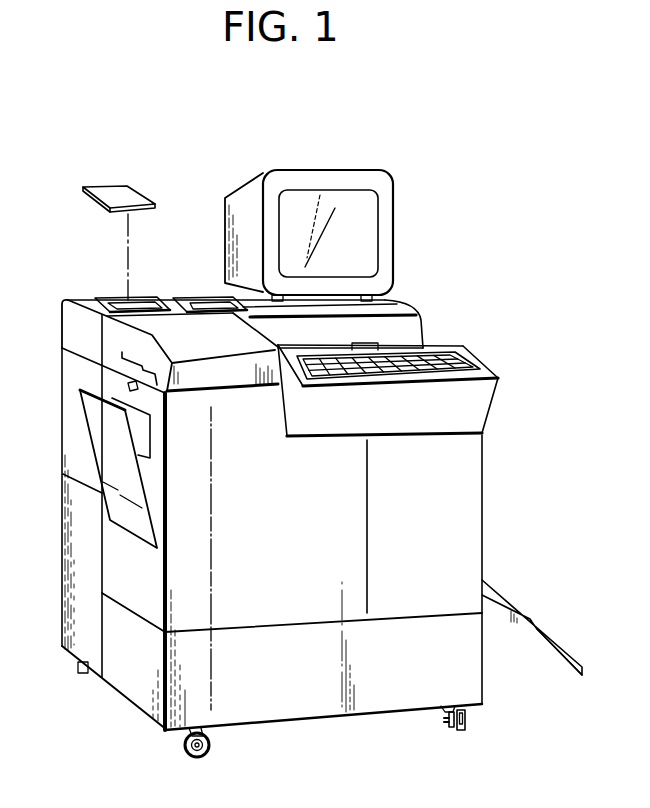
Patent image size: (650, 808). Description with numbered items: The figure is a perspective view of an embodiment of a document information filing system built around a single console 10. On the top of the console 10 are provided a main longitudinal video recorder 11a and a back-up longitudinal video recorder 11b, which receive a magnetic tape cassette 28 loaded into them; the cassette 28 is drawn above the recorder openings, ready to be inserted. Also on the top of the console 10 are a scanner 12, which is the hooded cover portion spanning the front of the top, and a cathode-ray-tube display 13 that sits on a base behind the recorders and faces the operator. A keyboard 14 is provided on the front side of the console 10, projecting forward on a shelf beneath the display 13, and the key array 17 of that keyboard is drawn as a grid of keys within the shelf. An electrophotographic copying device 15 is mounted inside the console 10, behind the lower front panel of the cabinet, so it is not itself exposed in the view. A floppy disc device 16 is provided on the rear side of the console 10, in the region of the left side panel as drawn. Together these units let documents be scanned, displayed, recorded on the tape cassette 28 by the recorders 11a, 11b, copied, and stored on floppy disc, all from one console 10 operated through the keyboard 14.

The console 10 is at (489, 434).
The main longitudinal video recorder 11a is at (110, 297).
The back-up longitudinal video recorder 11b is at (198, 296).
The scanner 12 is at (107, 333).
The cathode-ray-tube display 13 is at (313, 183).
The keyboard 14 is at (424, 347).
The electrophotographic copying device 15 is at (290, 615).
The floppy disc device 16 is at (73, 365).
The keyboard 17 is at (356, 345).
The magnetic tape cassette 28 is at (117, 190).